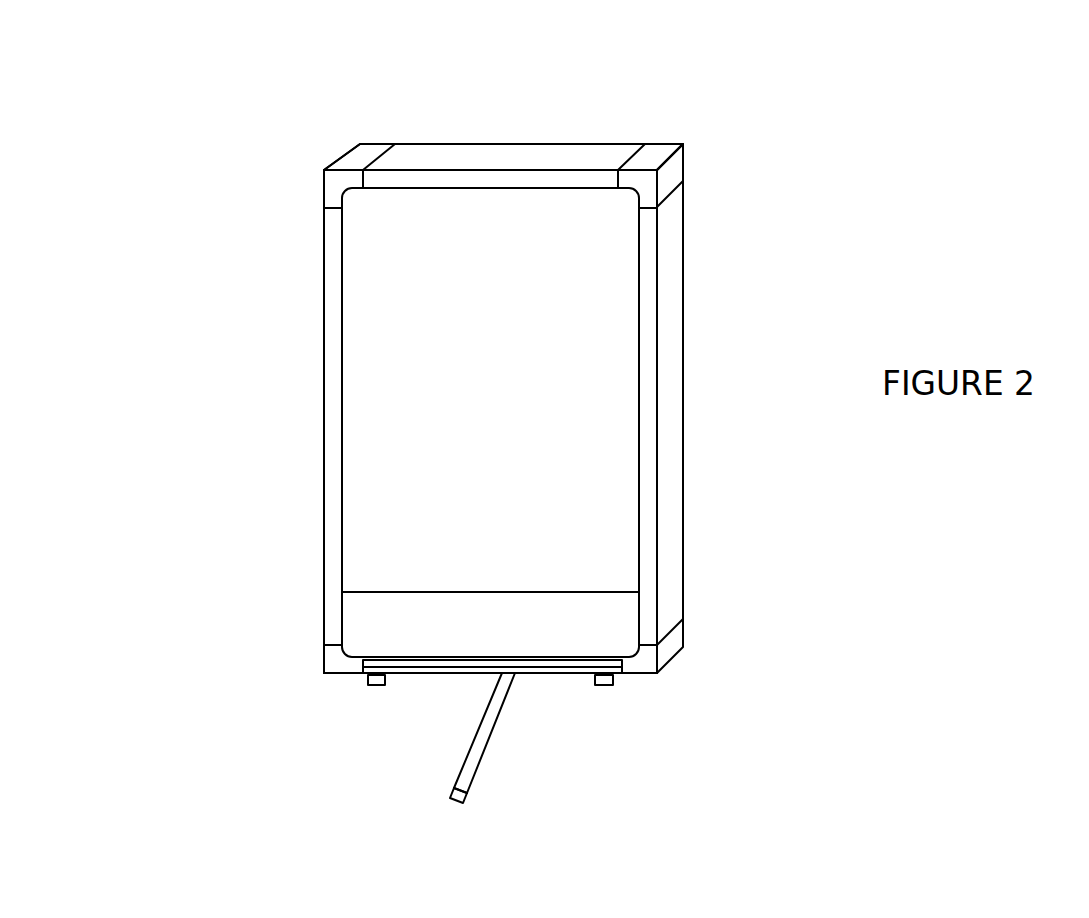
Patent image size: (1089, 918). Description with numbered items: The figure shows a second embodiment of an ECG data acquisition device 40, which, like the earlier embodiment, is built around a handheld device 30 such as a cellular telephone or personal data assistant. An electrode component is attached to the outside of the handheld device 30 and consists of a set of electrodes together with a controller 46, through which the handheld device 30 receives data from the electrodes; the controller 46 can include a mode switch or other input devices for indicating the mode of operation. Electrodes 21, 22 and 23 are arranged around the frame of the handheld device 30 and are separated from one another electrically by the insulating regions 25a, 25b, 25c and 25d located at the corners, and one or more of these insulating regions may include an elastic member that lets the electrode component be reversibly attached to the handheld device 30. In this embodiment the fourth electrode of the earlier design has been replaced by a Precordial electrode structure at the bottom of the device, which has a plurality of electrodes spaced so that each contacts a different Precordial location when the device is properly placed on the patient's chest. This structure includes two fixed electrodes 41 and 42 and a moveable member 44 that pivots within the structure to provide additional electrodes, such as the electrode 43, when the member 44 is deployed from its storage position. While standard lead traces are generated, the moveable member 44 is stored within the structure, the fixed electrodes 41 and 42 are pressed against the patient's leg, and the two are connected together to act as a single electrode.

The ECG data acquisition device 40 is at (150, 121).
The electrode 21 is at (675, 282).
The electrode 22 is at (330, 382).
The electrode 23 is at (562, 151).
The insulating region 25a is at (346, 164).
The insulating region 25b is at (672, 170).
The insulating region 25c is at (648, 660).
The insulating region 25d is at (330, 672).
The handheld device 30 is at (508, 463).
The controller 46 is at (625, 613).
The fixed electrode 41 is at (373, 685).
The fixed electrode 42 is at (598, 685).
The electrode 43 is at (452, 807).
The moveable member 44 is at (497, 702).